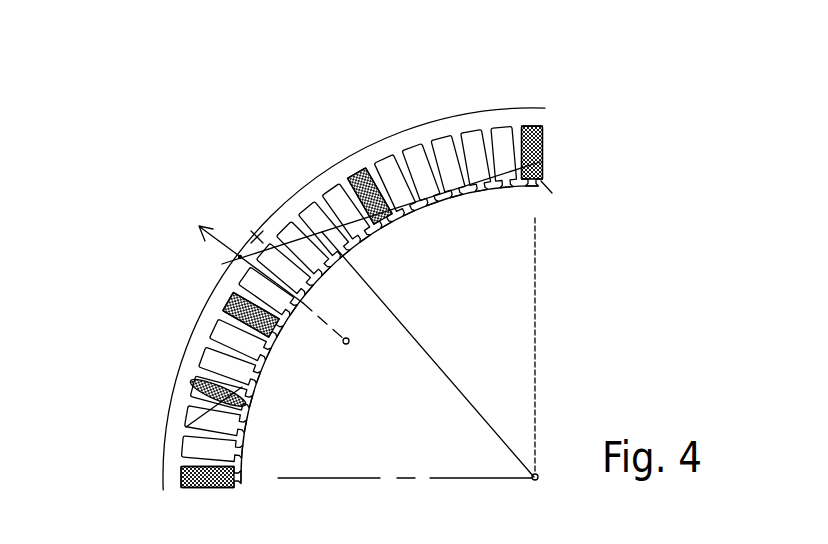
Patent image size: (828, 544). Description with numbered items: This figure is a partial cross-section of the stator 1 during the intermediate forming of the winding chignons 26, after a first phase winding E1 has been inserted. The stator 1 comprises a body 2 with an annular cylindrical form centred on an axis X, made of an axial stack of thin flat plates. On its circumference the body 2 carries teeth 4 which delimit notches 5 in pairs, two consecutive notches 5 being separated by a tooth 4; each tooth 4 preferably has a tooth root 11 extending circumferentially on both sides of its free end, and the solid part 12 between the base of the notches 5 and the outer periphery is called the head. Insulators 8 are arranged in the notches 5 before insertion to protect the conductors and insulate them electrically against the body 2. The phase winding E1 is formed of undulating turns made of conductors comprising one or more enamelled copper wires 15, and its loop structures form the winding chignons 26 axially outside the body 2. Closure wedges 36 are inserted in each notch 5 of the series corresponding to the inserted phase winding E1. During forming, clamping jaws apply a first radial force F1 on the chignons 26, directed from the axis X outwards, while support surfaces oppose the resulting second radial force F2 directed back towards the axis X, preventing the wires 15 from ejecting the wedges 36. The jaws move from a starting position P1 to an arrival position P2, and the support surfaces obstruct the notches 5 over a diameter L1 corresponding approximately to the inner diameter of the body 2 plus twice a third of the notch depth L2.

The stator 1 is at (187, 140).
The body 2 is at (175, 329).
The teeth 4 is at (307, 201).
The notches 5 is at (445, 172).
The insulators 8 is at (353, 163).
The tooth root 11 is at (245, 426).
The solid part 12 is at (386, 152).
The wires 15 is at (544, 140).
The winding chignons 26 is at (257, 236).
The closure wedges 36 is at (542, 188).
The phase winding E1 is at (365, 342).
The first radial force F1 is at (222, 252).
The second radial force F2 is at (255, 372).
The starting position P1 is at (350, 340).
The arrival position P2 is at (240, 260).
The diameter L1 is at (418, 337).
The depth of a notch L2 is at (186, 427).
The axis X is at (538, 473).